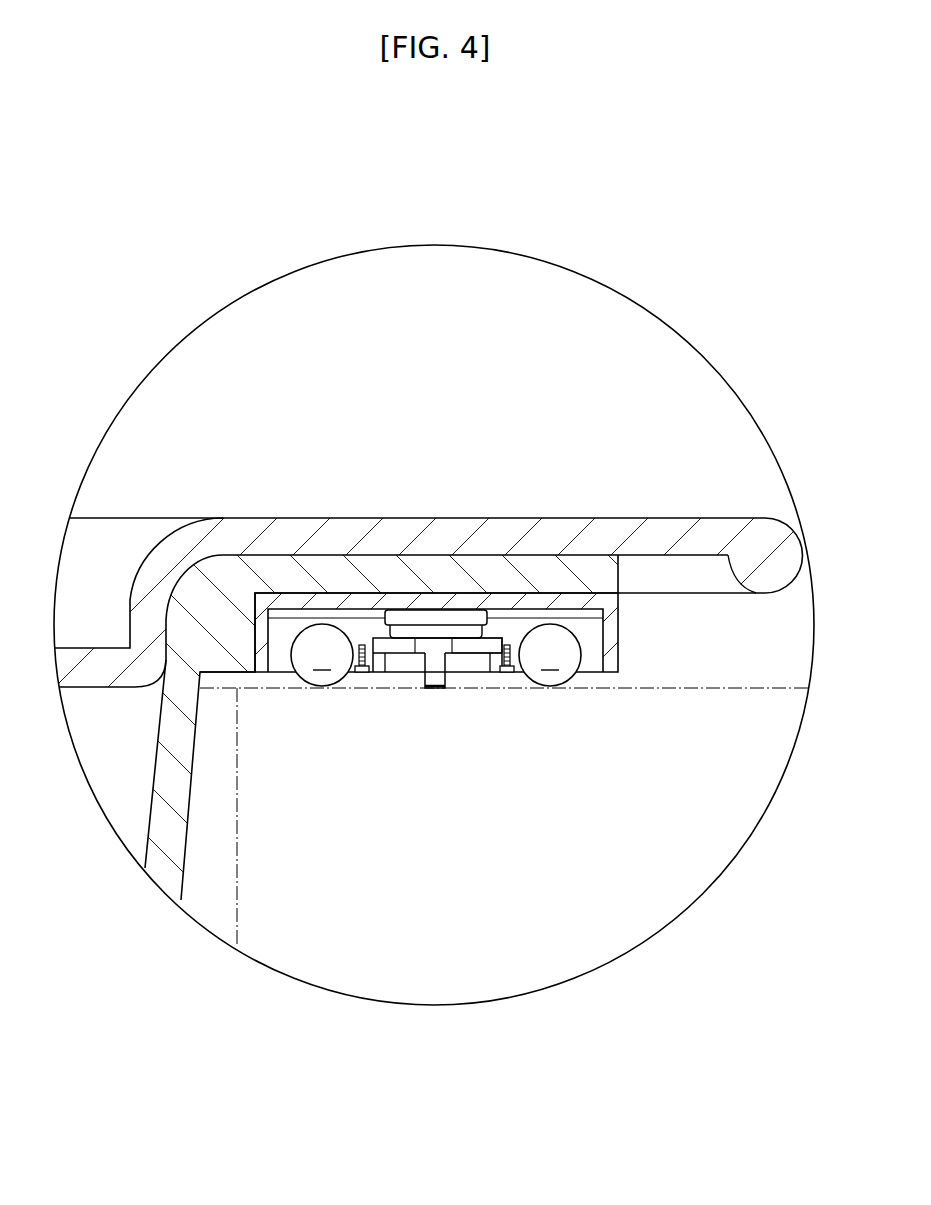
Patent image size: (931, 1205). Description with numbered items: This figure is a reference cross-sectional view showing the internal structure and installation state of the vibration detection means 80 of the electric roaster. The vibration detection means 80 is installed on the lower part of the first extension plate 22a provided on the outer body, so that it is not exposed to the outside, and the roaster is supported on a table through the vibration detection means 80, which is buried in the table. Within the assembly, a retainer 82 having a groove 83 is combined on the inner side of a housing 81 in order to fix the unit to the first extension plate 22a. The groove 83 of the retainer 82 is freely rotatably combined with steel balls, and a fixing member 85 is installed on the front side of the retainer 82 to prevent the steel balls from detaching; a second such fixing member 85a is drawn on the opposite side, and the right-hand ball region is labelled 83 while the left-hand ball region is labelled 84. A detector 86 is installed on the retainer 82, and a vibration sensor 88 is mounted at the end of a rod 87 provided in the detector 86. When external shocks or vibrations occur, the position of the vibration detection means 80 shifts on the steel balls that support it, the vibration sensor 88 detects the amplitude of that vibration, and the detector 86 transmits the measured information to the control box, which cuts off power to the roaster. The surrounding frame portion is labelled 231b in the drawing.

The first extension plate 22a is at (380, 568).
The detector 86 is at (457, 616).
The frame 231b is at (590, 527).
The housing 81 is at (618, 633).
The first ball 84 is at (305, 680).
The groove 83 is at (568, 638).
The fixing member 85 is at (386, 672).
The second screw 85a is at (507, 672).
The rod 87 is at (421, 673).
The vibration sensor 88 is at (431, 676).
The retainer 82 is at (483, 654).
The vibration detection means 80 is at (494, 622).